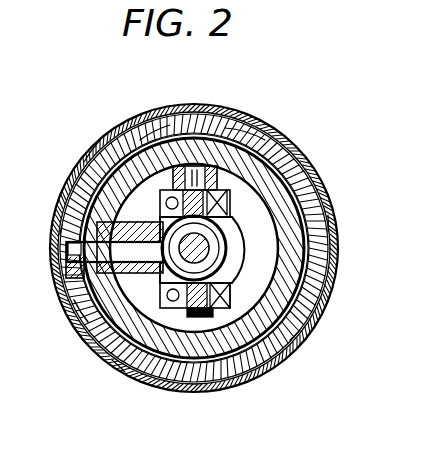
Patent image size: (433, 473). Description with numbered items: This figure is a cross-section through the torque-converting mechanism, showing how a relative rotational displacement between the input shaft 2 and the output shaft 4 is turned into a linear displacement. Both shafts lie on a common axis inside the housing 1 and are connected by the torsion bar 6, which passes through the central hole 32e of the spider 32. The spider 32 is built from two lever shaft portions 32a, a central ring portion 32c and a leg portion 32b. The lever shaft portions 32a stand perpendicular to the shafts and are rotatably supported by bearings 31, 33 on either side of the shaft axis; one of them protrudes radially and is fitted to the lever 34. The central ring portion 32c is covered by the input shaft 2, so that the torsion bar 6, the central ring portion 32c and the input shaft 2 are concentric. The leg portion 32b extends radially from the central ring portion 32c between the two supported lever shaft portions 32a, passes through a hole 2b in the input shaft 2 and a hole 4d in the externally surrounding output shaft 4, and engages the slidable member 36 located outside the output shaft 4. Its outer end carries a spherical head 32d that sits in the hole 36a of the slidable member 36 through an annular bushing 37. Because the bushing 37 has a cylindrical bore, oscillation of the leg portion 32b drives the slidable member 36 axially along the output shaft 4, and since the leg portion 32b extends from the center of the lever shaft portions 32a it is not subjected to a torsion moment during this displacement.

The housing 1 is at (296, 353).
The input shaft 2 is at (334, 258).
The hole 2b is at (118, 367).
The output shaft 4 is at (195, 166).
The hole 4d is at (74, 310).
The torsion bar 6 is at (310, 191).
The bearing 31 is at (288, 144).
The spider 32 is at (112, 350).
The lever shaft portions 32a is at (153, 132).
The leg portion 32b is at (85, 160).
The central ring portion 32c is at (305, 324).
The spherical head 32d is at (58, 243).
The central hole 32e is at (333, 223).
The bearing 33 is at (250, 360).
The lever 34 is at (248, 128).
The slidable member 36 is at (208, 369).
The hole 36a is at (70, 222).
The annular bushing 37 is at (67, 274).